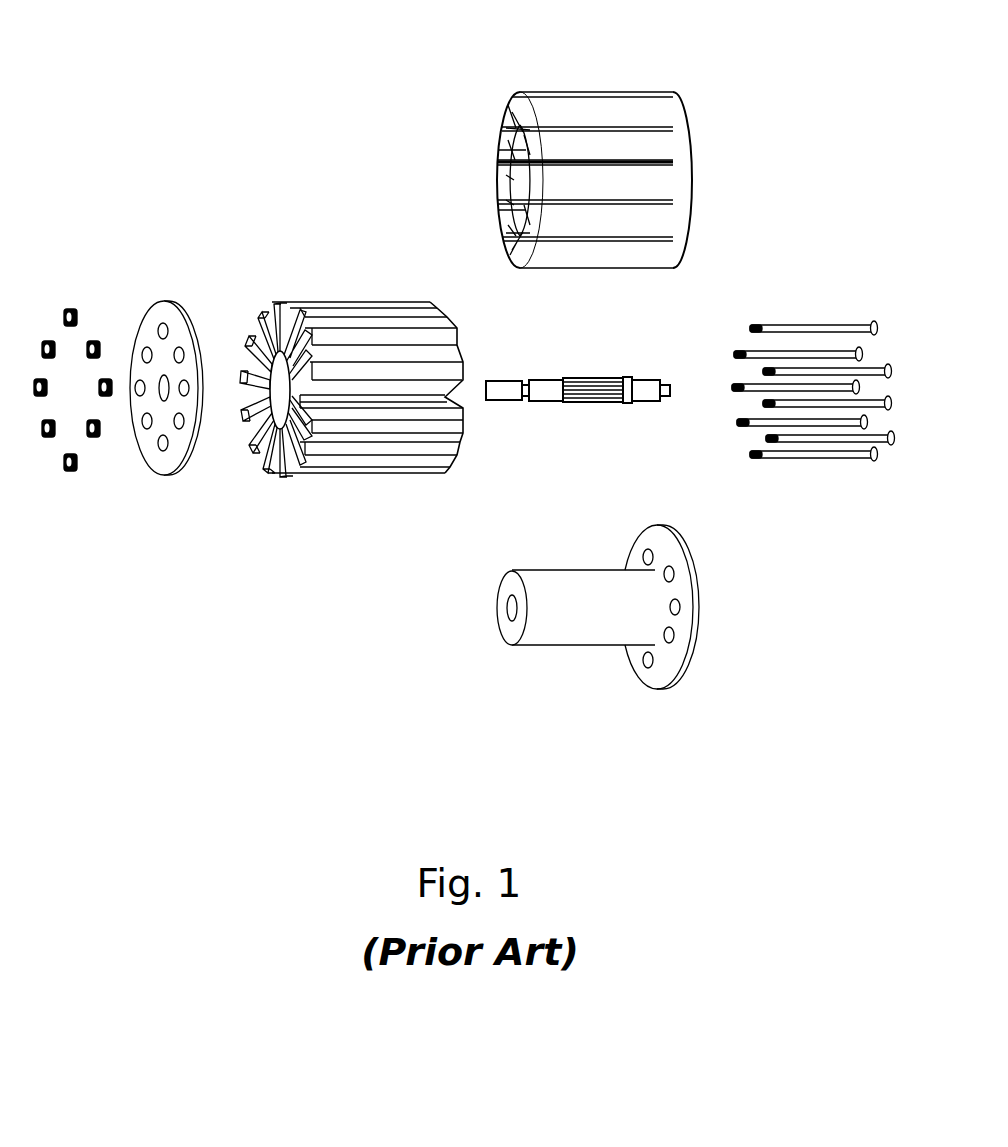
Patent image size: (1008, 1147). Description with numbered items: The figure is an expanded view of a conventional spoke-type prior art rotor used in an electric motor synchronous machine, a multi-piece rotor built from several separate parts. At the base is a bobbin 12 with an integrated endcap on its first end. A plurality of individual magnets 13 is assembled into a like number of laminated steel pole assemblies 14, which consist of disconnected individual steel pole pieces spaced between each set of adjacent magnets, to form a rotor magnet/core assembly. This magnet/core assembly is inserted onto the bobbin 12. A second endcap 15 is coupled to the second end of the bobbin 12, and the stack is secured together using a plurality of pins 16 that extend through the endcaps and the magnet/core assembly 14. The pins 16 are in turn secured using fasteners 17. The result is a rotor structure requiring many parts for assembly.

The bobbin 12 is at (670, 678).
The individual magnets 13 is at (345, 477).
The laminated steel pole assemblies 14 is at (587, 91).
The second endcap 15 is at (162, 300).
The pins 16 is at (795, 325).
The fasteners 17 is at (76, 310).